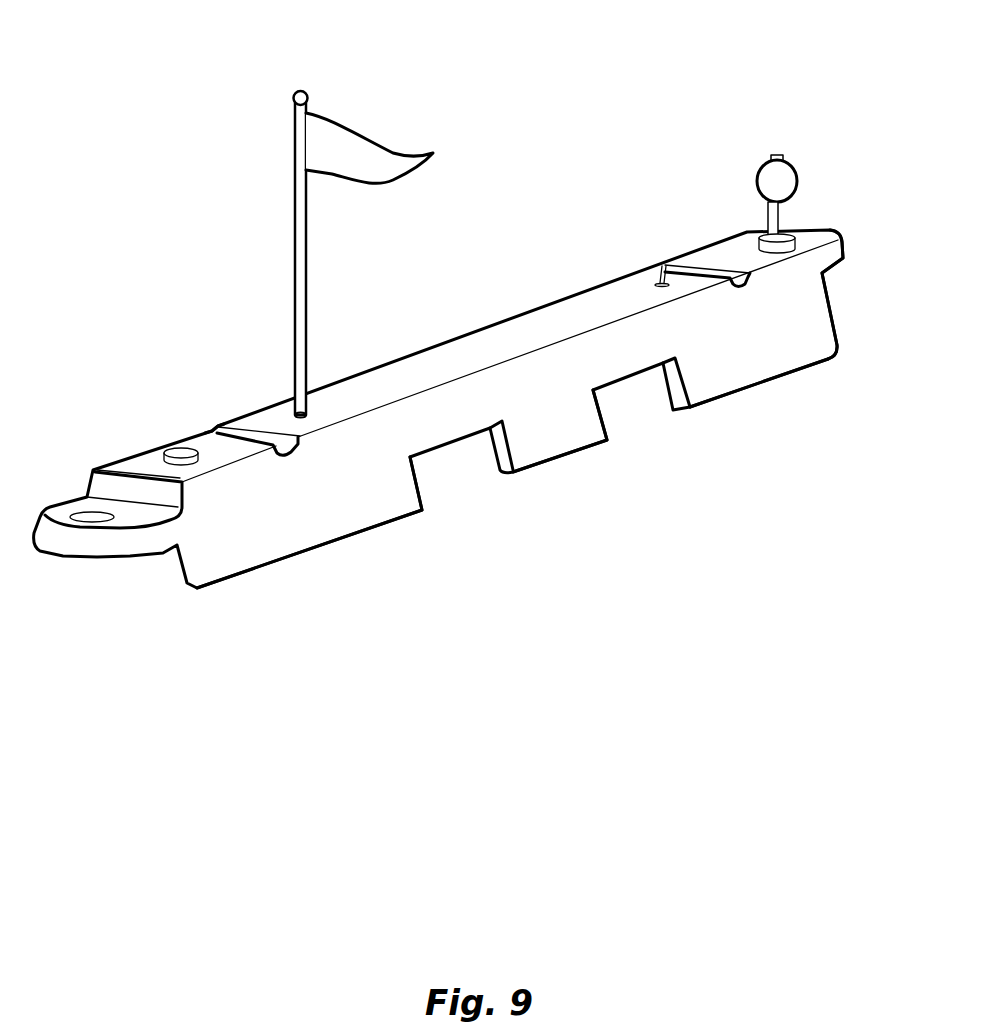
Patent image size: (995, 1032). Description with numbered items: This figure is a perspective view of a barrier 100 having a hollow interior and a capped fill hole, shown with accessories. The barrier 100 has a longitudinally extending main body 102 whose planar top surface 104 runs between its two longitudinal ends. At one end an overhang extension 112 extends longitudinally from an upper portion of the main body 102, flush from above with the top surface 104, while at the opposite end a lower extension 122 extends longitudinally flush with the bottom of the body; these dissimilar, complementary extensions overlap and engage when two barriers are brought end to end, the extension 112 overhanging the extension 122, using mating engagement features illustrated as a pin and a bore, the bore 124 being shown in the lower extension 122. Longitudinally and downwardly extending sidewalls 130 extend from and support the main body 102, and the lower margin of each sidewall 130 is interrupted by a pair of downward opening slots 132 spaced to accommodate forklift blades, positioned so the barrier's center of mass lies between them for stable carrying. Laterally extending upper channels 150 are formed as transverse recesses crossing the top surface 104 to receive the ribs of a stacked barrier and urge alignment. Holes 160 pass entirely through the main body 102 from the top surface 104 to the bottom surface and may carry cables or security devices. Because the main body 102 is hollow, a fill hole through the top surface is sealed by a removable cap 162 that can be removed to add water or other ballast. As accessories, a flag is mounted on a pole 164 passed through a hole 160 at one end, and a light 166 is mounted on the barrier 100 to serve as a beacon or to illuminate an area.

The barrier 100 is at (533, 102).
The main body 102 is at (495, 342).
The top surface 104 is at (427, 373).
The overhang extension 112 is at (825, 255).
The lower extension 122 is at (128, 547).
The aperture 124 is at (87, 512).
The sidewall 130 is at (337, 507).
The downward opening slot 132 is at (453, 482).
The upper channel 150 is at (200, 427).
The hole 160 is at (287, 420).
The removable cap 162 is at (180, 453).
The pole 164 is at (303, 288).
The light 166 is at (781, 182).